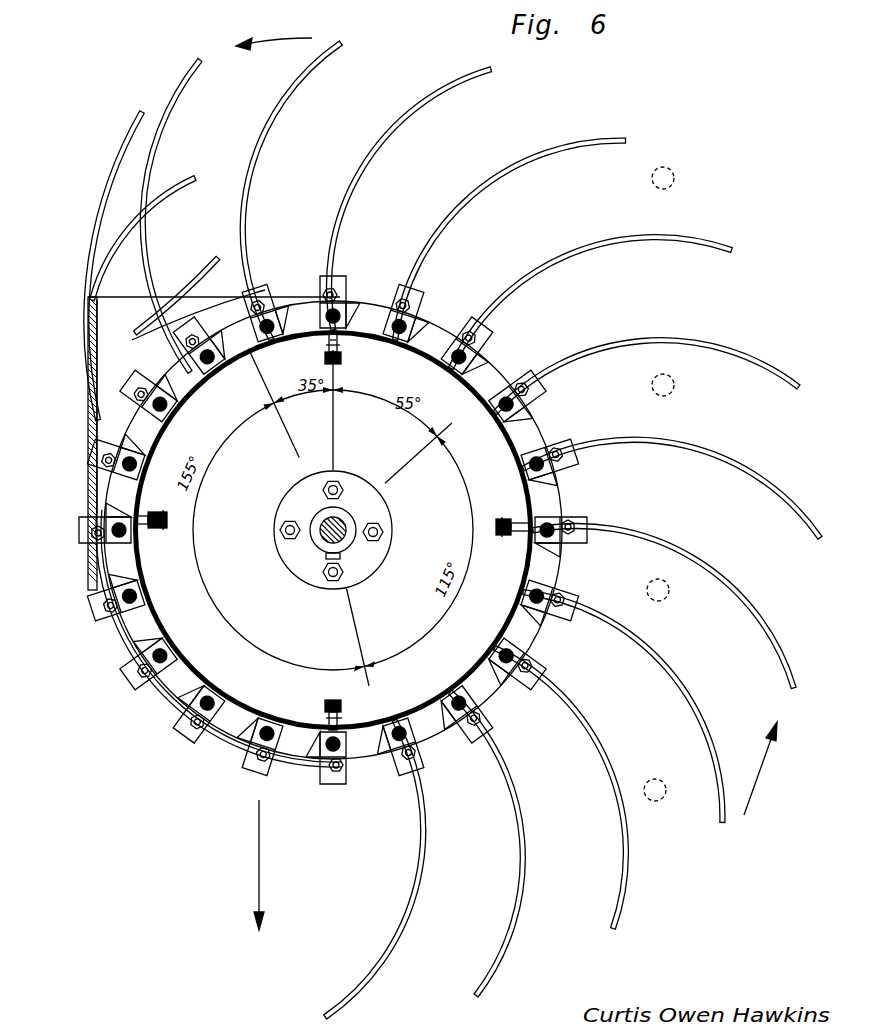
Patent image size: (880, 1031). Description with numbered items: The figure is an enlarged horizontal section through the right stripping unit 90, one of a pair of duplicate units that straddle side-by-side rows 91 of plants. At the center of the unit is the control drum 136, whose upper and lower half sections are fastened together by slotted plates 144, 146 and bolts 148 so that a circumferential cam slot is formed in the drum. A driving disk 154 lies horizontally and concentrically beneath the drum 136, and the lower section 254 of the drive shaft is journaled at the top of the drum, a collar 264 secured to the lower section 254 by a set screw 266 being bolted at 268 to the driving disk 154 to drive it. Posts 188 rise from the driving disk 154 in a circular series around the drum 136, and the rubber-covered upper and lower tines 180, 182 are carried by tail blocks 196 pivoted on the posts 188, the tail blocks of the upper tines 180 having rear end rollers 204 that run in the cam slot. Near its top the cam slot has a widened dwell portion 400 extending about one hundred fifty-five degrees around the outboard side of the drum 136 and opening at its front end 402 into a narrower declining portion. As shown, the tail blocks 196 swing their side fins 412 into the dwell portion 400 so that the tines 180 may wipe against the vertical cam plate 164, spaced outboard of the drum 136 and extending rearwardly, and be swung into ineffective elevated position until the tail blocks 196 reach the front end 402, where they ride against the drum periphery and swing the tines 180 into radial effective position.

The right stripping unit 90 is at (503, 360).
The row of plants 91 is at (676, 184).
The control drum 136 is at (537, 635).
The slotted plate 144 is at (343, 362).
The slotted plate 146 is at (327, 353).
The bolt 148 is at (321, 361).
The driving disk 154 is at (530, 424).
The cam plate 164 is at (93, 592).
The upper stripping tine 180 is at (507, 181).
The lower stripping tine 182 is at (203, 262).
The post 188 is at (462, 707).
The tail block 196 is at (405, 768).
The rear end roller 204 is at (443, 690).
The lower section of the shaft 254 is at (343, 525).
The collar 264 is at (374, 548).
The set screw 266 is at (328, 556).
The bolt 268 is at (337, 577).
The dwell portion 400 is at (197, 684).
The front end 402 is at (368, 753).
The side fin 412 is at (142, 597).